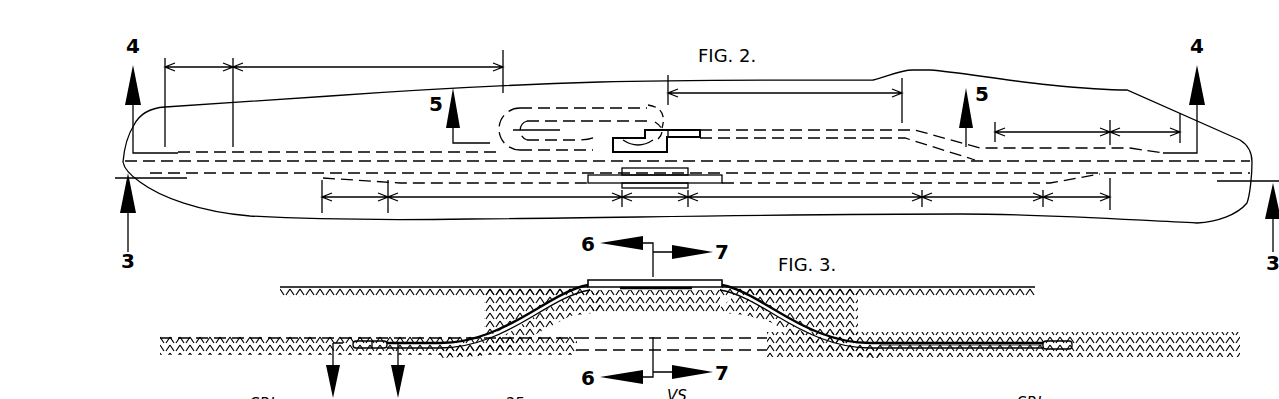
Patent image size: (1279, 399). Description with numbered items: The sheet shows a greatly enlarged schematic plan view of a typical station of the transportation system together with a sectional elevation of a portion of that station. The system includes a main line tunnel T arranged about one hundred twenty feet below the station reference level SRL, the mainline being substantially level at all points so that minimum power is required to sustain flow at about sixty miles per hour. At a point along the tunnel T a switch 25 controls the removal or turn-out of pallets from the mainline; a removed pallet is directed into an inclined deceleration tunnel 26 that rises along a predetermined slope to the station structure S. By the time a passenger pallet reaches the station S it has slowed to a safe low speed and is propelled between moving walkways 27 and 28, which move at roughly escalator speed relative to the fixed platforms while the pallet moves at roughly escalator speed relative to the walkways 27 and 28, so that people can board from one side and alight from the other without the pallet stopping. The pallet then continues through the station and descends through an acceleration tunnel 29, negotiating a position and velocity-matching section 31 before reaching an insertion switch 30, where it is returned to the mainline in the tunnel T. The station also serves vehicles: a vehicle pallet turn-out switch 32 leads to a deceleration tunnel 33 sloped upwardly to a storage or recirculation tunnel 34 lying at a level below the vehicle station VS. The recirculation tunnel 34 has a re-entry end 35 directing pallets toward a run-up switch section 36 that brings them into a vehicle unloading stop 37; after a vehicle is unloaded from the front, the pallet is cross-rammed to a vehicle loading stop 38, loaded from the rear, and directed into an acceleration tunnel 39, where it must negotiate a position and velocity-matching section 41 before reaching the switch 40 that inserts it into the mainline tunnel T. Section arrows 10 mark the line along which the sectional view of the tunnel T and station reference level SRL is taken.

In FIG. 3, the section arrows 10 is at (364, 371).
In FIG. 2, the switch 25 is at (354, 210).
In FIG. 3, the switch 25 is at (363, 355).
In FIG. 2, the inclined deceleration tunnel 26 is at (492, 203).
In FIG. 3, the inclined deceleration tunnel 26 is at (525, 325).
In FIG. 2, the moving walkway 27 is at (642, 190).
In FIG. 2, the moving walkway 28 is at (698, 171).
In FIG. 3, the moving walkway 28 is at (672, 292).
In FIG. 2, the acceleration tunnel 29 is at (831, 200).
In FIG. 3, the acceleration tunnel 29 is at (808, 338).
In FIG. 2, the insertion switch 30 is at (1075, 206).
In FIG. 3, the insertion switch 30 is at (1062, 340).
In FIG. 2, the position and velocity-matching section 31 is at (971, 200).
In FIG. 3, the position and velocity-matching section 31 is at (980, 340).
In FIG. 2, the vehicle pallet turn-out switch 32 is at (212, 66).
In FIG. 2, the deceleration tunnel 33 is at (364, 66).
In FIG. 2, the storage or recirculation tunnel 34 is at (568, 107).
In FIG. 2, the re-entry end 35 is at (504, 142).
In FIG. 2, the run-up switch section 36 is at (597, 140).
In FIG. 2, the vehicle unloading stop 37 is at (629, 140).
In FIG. 2, the vehicle loading stop 38 is at (656, 115).
In FIG. 2, the acceleration tunnel 39 is at (781, 93).
In FIG. 2, the switch 40 is at (1145, 128).
In FIG. 2, the position and velocity-matching section 41 is at (1062, 126).
In FIG. 2, the station structure S is at (680, 203).
In FIG. 3, the station structure S is at (595, 268).
In FIG. 2, the vehicle station VS is at (697, 125).
In FIG. 2, the main line tunnel T is at (825, 158).
In FIG. 3, the main line tunnel T is at (173, 338).
In FIG. 3, the station reference level SRL is at (985, 287).